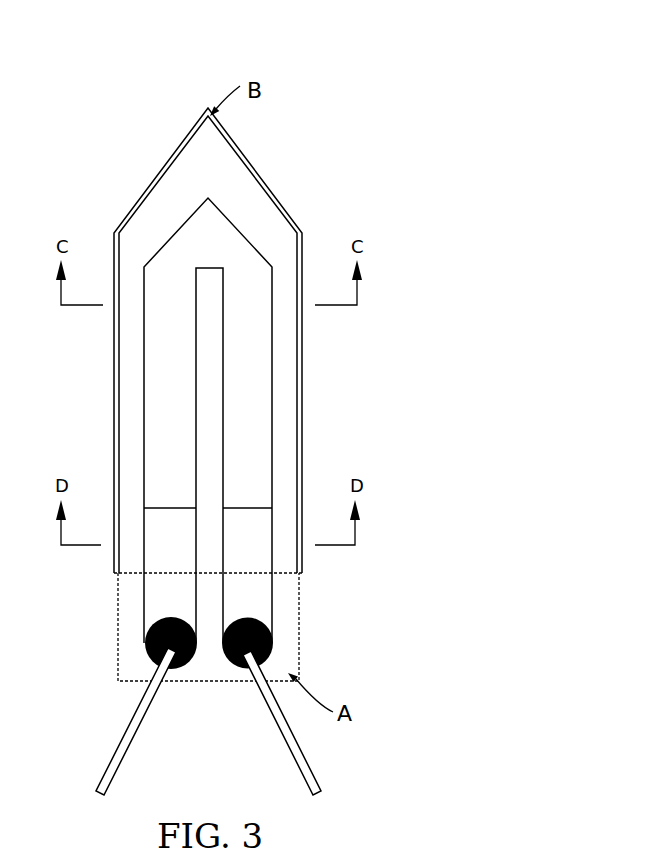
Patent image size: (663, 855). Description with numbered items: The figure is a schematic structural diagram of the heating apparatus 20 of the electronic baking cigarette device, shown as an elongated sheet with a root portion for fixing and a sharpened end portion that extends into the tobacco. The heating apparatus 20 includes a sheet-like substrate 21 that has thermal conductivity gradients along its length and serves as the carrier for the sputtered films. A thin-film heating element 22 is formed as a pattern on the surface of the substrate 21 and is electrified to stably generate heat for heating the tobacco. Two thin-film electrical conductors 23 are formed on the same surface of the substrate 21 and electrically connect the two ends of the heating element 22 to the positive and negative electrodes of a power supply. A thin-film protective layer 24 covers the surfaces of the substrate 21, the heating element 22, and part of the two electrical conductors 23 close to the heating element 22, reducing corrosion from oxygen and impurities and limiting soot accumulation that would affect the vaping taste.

The heating apparatus 20 is at (218, 31).
The substrate 21 is at (293, 600).
The heating element 22 is at (258, 408).
The electrical conductors 23 is at (247, 590).
The protective layer 24 is at (114, 432).